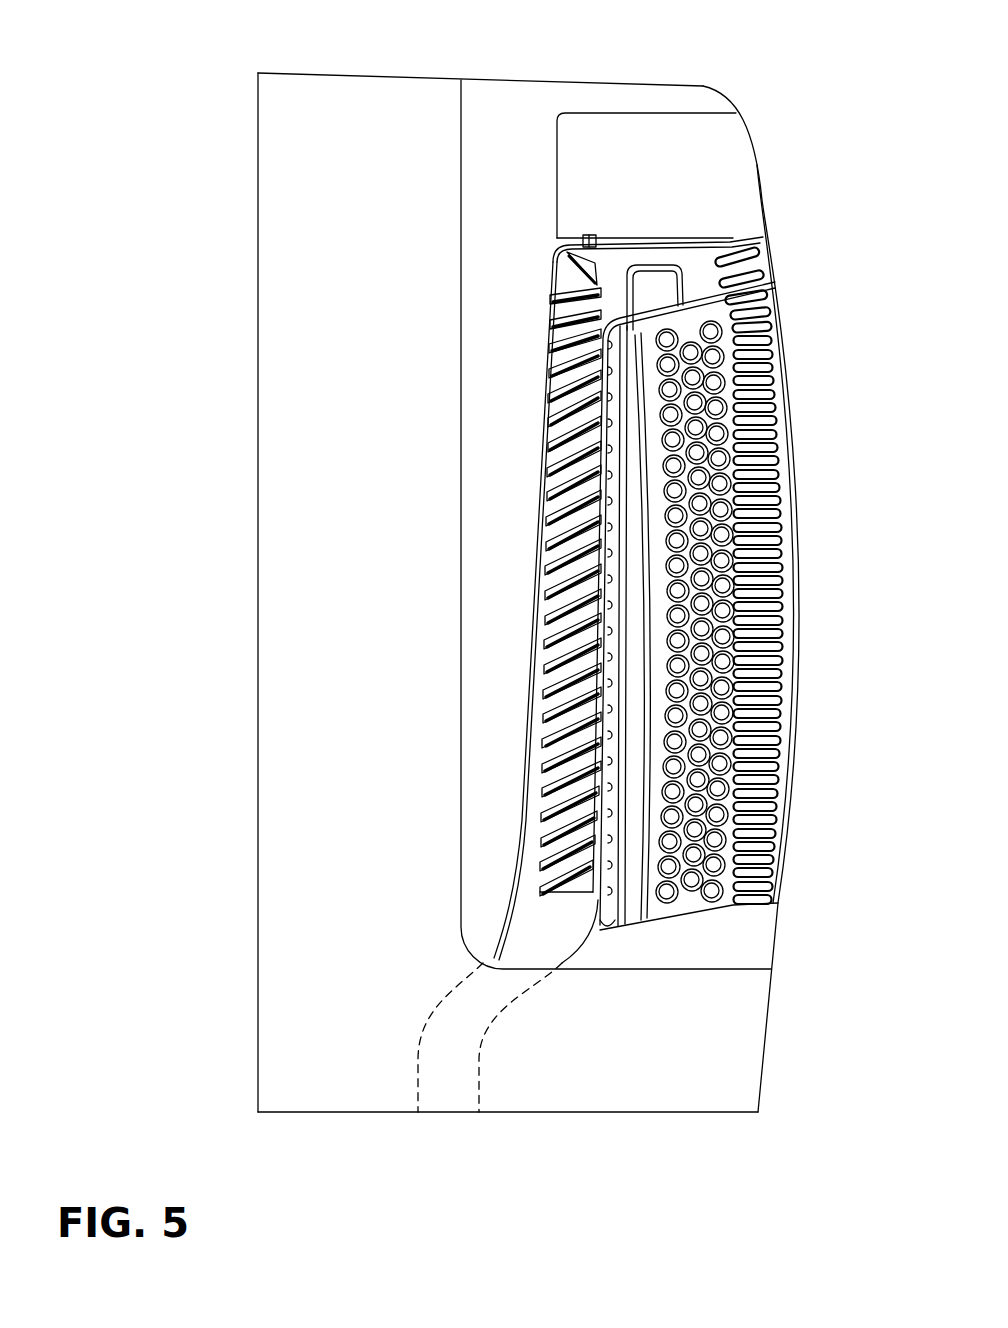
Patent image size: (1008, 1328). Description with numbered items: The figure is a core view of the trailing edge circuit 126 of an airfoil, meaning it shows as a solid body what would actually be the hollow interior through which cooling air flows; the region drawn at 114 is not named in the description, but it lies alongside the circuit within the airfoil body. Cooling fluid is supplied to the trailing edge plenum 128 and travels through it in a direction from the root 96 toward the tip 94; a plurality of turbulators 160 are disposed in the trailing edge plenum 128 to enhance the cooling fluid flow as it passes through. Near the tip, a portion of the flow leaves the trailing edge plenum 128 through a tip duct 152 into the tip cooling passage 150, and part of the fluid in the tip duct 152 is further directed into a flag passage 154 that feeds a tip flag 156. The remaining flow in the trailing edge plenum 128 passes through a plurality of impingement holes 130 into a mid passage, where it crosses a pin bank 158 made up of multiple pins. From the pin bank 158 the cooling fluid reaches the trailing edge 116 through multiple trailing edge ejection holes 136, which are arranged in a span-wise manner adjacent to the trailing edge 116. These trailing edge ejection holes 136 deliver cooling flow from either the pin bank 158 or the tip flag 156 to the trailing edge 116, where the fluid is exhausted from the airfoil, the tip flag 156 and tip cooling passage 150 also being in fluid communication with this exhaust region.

The tip 94 is at (418, 77).
The root 96 is at (631, 1112).
The trim panel 114 is at (258, 568).
The trailing edge 116 is at (800, 543).
The trailing edge circuit 126 is at (540, 55).
The trailing edge plenum 128 is at (527, 930).
The impingement holes 130 is at (600, 940).
The trailing edge ejection holes 136 is at (733, 232).
The tip cooling passage 150 is at (583, 177).
The tip duct 152 is at (583, 241).
The flag passage 154 is at (641, 257).
The tip flag 156 is at (783, 251).
The pin bank 158 is at (697, 924).
The turbulators 160 is at (555, 538).